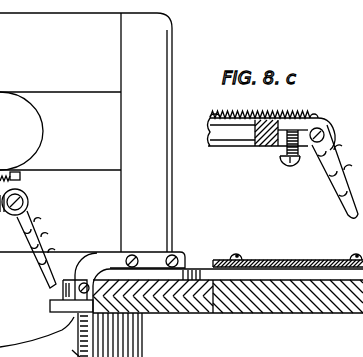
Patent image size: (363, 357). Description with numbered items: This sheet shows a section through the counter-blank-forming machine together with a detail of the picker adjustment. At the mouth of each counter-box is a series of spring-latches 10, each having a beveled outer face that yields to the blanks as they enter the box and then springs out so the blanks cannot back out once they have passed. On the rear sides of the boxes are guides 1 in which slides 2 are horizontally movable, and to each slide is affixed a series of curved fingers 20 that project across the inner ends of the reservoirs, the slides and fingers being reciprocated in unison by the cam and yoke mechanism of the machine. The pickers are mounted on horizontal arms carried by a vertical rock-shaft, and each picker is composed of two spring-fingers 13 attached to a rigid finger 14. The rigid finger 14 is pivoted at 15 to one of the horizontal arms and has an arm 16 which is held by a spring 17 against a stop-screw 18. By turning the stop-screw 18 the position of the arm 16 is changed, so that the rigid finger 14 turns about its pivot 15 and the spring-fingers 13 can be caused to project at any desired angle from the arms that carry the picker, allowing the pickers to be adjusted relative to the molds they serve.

In FIG. 8, the rigid finger 14 is at (28, 214).
In FIG. 8c, the rigid finger 14 is at (333, 168).
In FIG. 8, the spring-latches 10 is at (82, 201).
In FIG. 8, the spring-fingers 13 is at (30, 274).
In FIG. 8c, the spring-fingers 13 is at (347, 213).
In FIG. 8, the curved fingers 20 is at (78, 320).
In FIG. 8, the slides 2 is at (203, 267).
In FIG. 8, the guides 1 is at (287, 260).
In FIG. 8c, the spring 17 is at (238, 113).
In FIG. 8c, the arm 16 is at (290, 118).
In FIG. 8c, the pivot 15 is at (314, 146).
In FIG. 8c, the stop-screw 18 is at (280, 152).